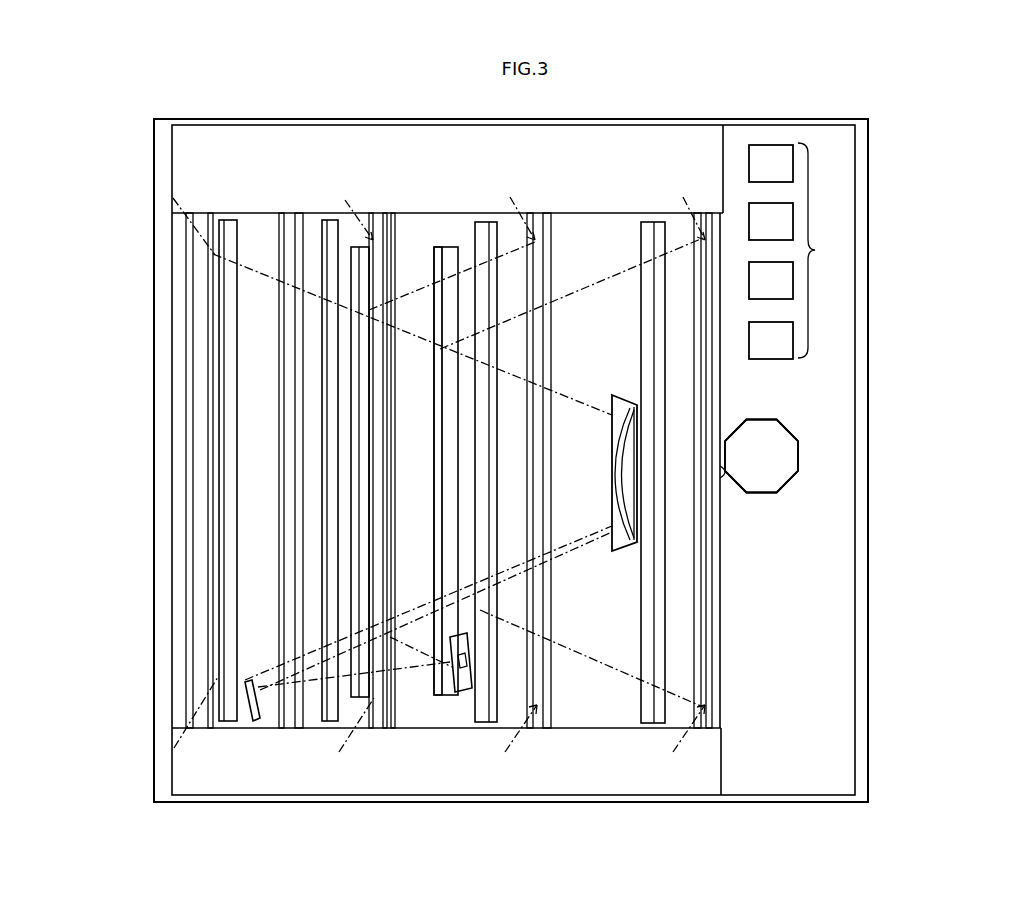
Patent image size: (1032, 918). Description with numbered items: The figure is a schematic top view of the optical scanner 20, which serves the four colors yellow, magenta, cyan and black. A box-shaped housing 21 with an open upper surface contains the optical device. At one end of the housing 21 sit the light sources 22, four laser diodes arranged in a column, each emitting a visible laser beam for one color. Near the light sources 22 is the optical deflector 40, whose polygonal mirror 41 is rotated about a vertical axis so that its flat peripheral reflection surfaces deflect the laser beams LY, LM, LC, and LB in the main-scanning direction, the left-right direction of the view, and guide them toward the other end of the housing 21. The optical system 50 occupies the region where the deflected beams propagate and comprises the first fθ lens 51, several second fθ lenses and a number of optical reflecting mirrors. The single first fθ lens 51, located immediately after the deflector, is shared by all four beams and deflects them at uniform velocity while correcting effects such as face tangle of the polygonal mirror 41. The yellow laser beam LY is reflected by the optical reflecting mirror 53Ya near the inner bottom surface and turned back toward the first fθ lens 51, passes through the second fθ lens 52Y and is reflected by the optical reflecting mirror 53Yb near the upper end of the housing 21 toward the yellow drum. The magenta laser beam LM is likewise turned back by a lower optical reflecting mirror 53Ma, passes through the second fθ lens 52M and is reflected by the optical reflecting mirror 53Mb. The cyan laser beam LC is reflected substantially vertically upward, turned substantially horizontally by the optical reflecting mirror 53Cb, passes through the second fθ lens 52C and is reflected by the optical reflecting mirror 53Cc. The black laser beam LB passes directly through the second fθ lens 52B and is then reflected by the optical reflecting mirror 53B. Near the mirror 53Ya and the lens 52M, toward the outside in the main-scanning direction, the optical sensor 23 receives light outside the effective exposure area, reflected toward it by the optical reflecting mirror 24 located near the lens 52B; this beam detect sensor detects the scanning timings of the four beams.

The optical scanner 20 is at (928, 362).
The housing 21 is at (868, 665).
The light source 22 is at (815, 250).
The optical sensor 23 is at (453, 702).
The optical reflecting mirror 24 is at (258, 722).
The optical deflector 40 is at (784, 503).
The polygonal mirror 41 is at (757, 493).
The optical system 50 is at (447, 245).
The first fθ lens 51 is at (613, 395).
The second fθ lens 52B is at (236, 220).
The second fθ lens 52C is at (332, 220).
The second fθ lens 52M is at (481, 222).
The second fθ lens 52Y is at (641, 247).
The optical reflecting mirror 53B is at (204, 228).
The optical reflecting mirror 53Cb is at (290, 225).
The optical reflecting mirror 53Cc is at (387, 729).
The reflecting mirror for magenta 53Ma is at (367, 280).
The optical reflecting mirror 53Mb is at (552, 588).
The optical reflecting mirror 53Ya is at (437, 698).
The optical reflecting mirror 53Yb is at (720, 660).
The black laser beam LB is at (181, 729).
The cyan laser beam LC is at (345, 200).
The magenta laser beam LM is at (510, 197).
The yellow laser beam LY is at (683, 197).